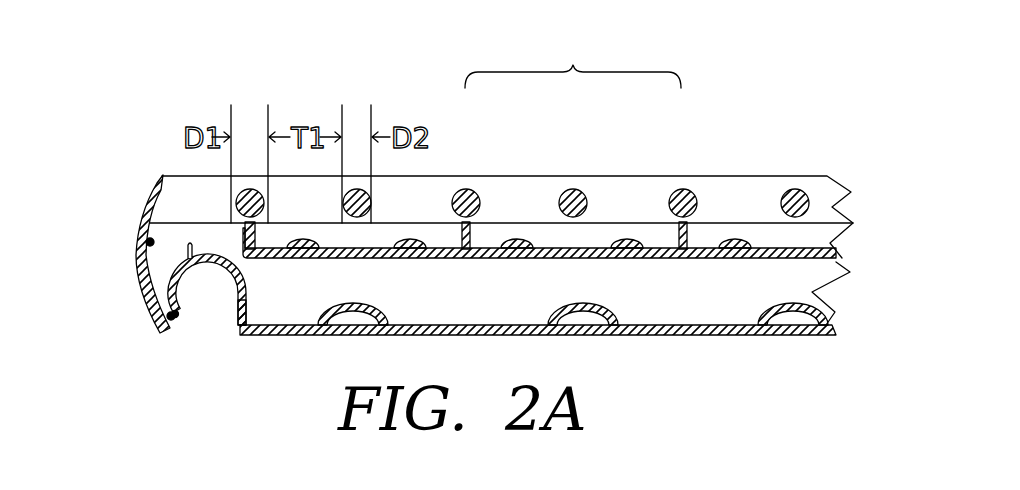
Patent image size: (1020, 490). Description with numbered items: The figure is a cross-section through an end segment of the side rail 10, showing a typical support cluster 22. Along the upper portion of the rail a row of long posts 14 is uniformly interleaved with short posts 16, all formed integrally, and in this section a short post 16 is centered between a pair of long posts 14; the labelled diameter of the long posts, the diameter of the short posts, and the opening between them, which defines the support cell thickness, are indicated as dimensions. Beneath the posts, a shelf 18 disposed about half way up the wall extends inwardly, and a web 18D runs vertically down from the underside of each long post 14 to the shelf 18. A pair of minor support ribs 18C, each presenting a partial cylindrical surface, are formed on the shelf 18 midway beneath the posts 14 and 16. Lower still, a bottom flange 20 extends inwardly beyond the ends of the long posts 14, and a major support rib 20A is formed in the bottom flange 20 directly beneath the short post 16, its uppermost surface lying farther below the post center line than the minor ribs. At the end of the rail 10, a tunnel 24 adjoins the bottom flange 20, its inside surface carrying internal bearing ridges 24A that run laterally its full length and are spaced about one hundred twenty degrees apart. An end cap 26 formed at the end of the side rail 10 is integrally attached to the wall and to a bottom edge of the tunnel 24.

The side rail 10 is at (102, 337).
The long post 14 is at (458, 191).
The short post 16 is at (562, 191).
The shelf 18 is at (558, 259).
The minor support rib 18C is at (626, 240).
The web 18D is at (677, 236).
The bottom flange 20 is at (693, 337).
The major support rib 20A is at (620, 338).
The support cluster 22 is at (573, 44).
The tunnel 24 is at (197, 276).
The internal bearing ridge 24A is at (233, 318).
The end cap 26 is at (132, 250).